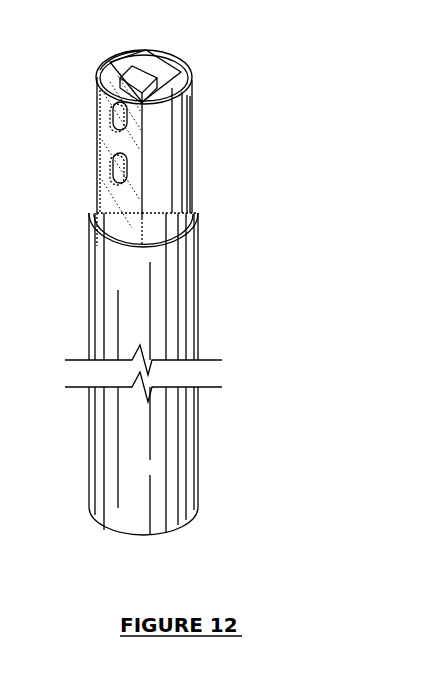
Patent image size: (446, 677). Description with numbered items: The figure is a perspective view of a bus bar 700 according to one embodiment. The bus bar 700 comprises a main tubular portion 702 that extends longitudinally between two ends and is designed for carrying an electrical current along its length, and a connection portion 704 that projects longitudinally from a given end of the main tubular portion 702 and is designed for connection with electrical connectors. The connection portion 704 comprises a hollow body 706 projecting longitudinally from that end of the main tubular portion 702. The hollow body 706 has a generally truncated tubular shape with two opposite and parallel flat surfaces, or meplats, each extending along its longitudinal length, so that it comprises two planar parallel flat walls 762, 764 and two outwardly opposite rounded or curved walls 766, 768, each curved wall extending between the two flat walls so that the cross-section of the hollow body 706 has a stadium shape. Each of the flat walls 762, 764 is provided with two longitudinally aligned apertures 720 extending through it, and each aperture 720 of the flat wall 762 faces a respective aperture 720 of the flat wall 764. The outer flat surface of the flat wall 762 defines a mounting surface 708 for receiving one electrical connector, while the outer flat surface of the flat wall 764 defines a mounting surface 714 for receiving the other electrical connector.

The bus bar 700 is at (176, 273).
The main tubular portion 702 is at (240, 500).
The connection portion 704 is at (172, 139).
The hollow body 706 is at (203, 170).
The mounting surface 708 is at (108, 130).
The mounting surface 714 is at (180, 73).
The aperture 720 is at (117, 168).
The flat wall 762 is at (112, 206).
The flat wall 764 is at (182, 63).
The curved wall 766 is at (131, 57).
The curved wall 768 is at (168, 212).